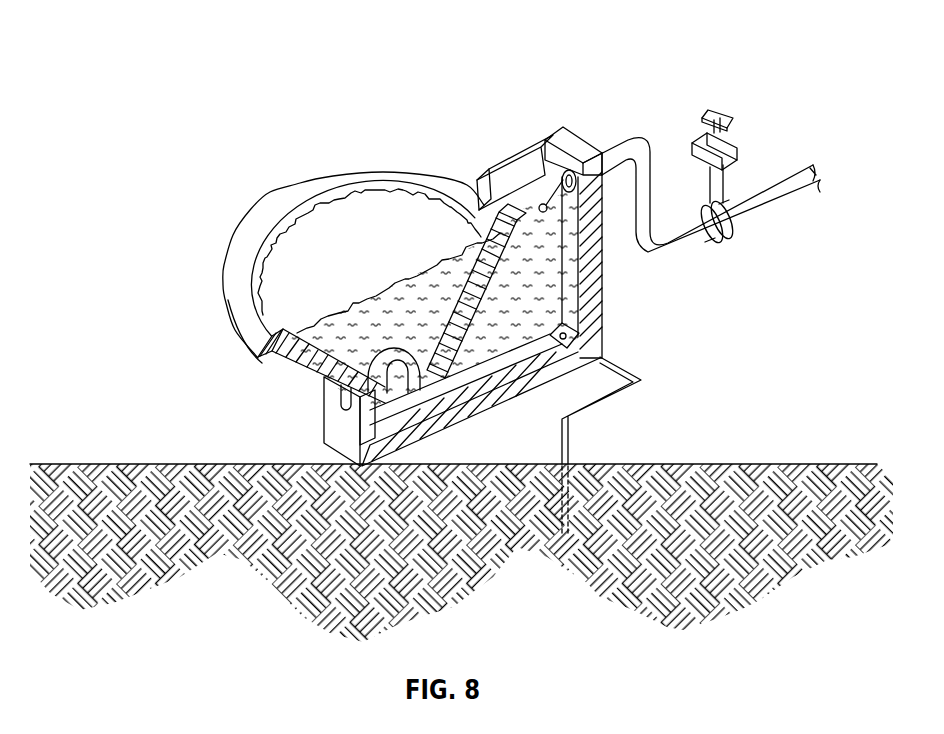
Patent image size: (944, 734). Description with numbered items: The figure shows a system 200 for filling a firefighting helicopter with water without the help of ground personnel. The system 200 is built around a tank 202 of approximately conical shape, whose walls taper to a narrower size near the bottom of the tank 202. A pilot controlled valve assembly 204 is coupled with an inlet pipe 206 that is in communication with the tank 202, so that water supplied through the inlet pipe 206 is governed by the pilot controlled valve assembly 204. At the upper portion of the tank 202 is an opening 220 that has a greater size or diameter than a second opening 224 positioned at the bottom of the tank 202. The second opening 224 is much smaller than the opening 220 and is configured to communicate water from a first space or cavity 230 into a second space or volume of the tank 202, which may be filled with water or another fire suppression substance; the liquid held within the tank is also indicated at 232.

The system 200 is at (112, 68).
The tank 202 is at (226, 303).
The pilot controlled valve assembly 204 is at (740, 98).
The inlet pipe 206 is at (753, 207).
The opening 220 is at (322, 232).
The second opening 224 is at (455, 420).
The first space or cavity 230 is at (550, 253).
The liquid 232 is at (422, 303).